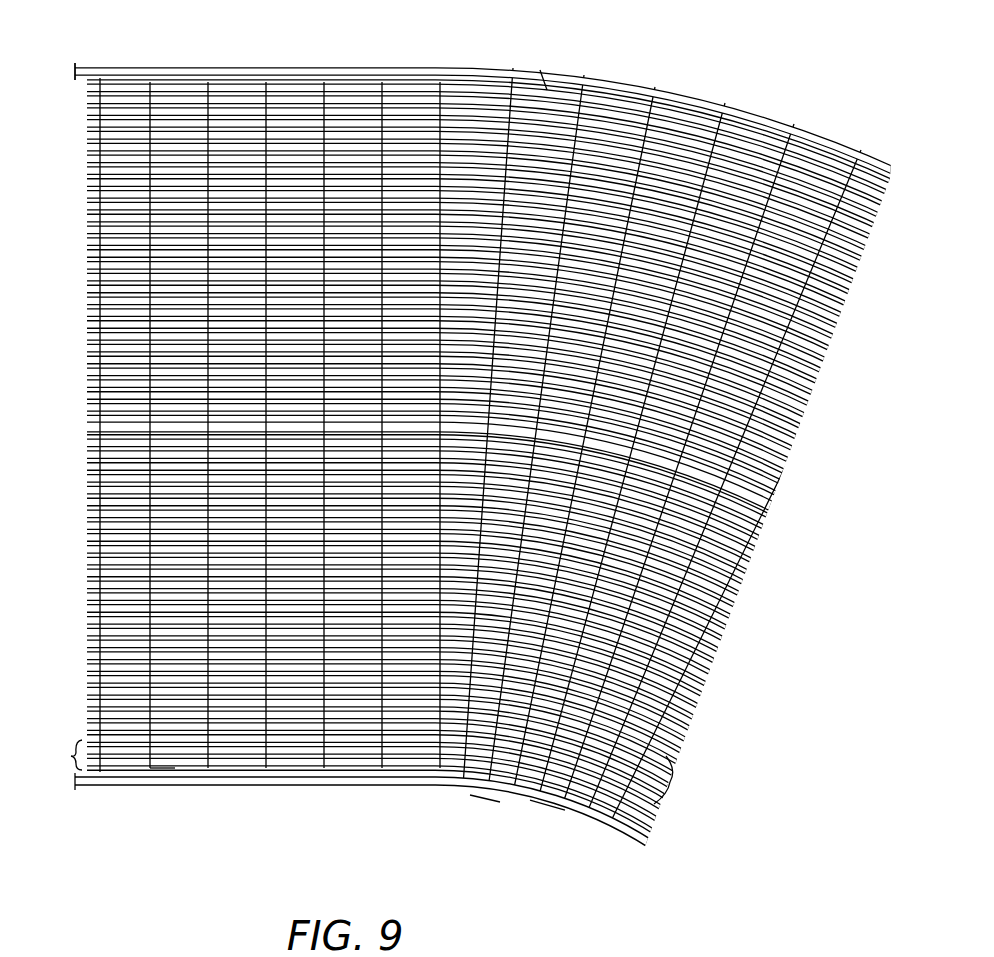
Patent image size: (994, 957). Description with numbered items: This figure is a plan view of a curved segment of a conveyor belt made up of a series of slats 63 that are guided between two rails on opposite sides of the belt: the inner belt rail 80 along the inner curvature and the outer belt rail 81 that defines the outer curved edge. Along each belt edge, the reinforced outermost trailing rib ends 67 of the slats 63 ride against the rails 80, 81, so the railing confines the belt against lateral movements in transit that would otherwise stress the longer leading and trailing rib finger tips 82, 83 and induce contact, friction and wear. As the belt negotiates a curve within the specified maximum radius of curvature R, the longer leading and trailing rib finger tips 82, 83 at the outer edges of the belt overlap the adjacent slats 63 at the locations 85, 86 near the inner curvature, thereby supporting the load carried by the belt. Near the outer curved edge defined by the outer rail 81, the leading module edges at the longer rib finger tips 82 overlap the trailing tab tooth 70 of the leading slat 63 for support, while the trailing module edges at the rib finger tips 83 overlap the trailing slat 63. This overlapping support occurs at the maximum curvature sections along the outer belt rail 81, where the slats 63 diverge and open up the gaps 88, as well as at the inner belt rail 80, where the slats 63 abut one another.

The slat 63 is at (125, 631).
The outermost trailing rib end 67 is at (653, 112).
The trailing tab tooth 70 is at (382, 84).
The inner belt rail 80 is at (75, 783).
The outer belt rail 81 is at (75, 74).
The leading rib finger tips 82 is at (71, 756).
The trailing rib finger tips 83 is at (671, 782).
The overlap location 85 is at (548, 800).
The overlap location 86 is at (163, 775).
The gaps 88 is at (547, 90).
The maximum radius of curvature R is at (484, 800).